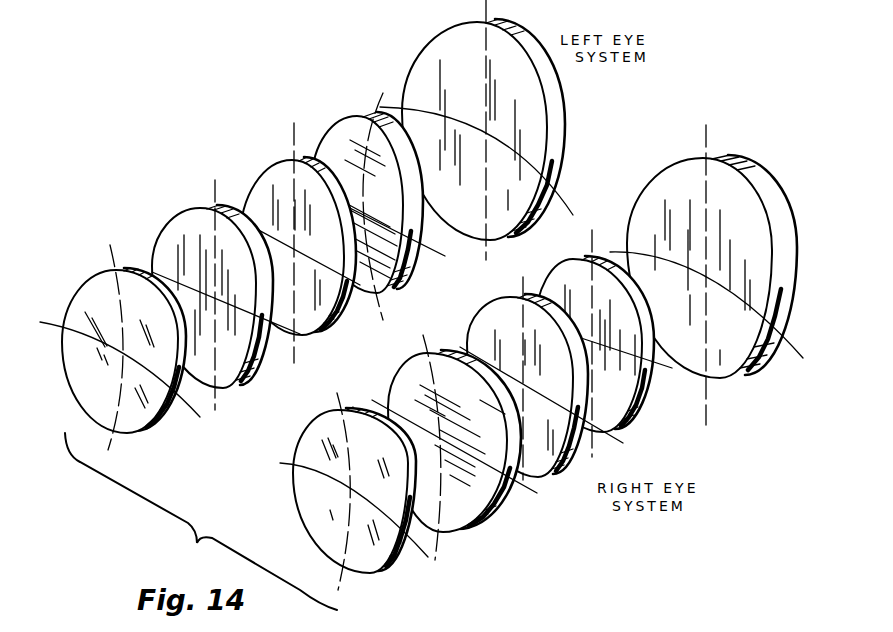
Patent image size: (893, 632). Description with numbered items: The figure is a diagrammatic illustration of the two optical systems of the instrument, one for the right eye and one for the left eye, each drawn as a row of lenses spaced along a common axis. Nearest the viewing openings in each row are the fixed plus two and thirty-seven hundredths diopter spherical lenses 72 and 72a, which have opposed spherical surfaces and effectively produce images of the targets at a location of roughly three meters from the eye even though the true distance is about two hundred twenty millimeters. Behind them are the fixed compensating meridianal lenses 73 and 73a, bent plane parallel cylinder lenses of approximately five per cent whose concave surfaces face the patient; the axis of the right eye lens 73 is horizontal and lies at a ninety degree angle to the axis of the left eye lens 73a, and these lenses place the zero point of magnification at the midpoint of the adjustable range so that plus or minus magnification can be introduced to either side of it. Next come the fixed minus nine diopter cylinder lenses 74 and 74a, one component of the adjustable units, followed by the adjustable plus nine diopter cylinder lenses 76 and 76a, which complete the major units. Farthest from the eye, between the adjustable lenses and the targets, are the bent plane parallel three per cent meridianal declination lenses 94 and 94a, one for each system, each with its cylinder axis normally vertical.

The fixed spherical lens 72a is at (145, 422).
The compensating meridianal lens 73a is at (233, 377).
The fixed minus cylinder lens 74a is at (313, 328).
The adjustable plus cylinder lens 76a is at (393, 293).
The declination lens 94a is at (560, 155).
The fixed spherical lens 72 is at (377, 565).
The compensating meridianal lens 73 is at (465, 517).
The fixed minus cylinder lens 74 is at (547, 470).
The adjustable plus cylinder lens 76 is at (628, 415).
The declination lens 94 is at (733, 372).